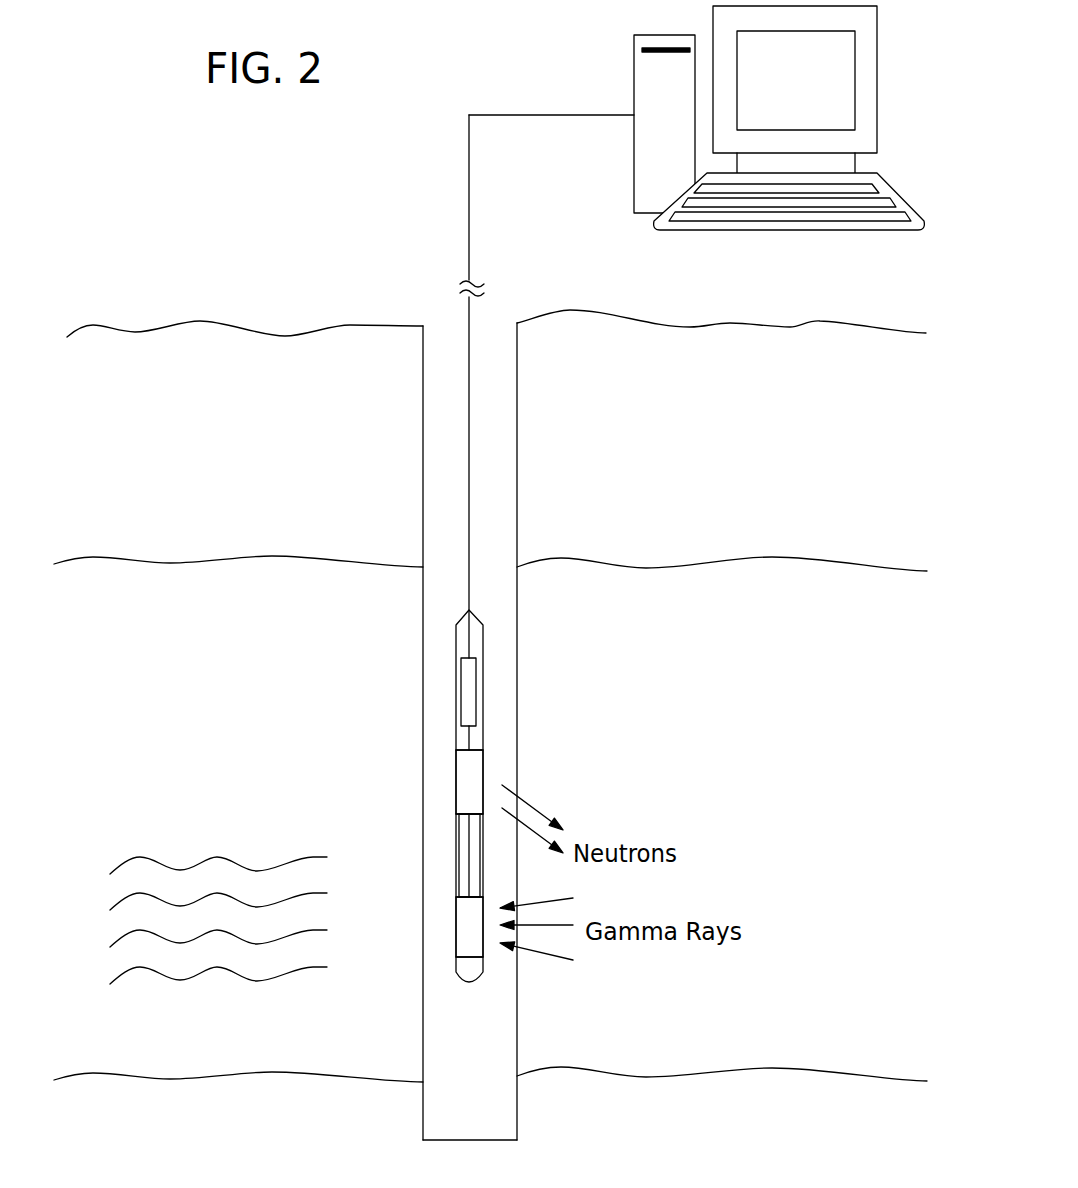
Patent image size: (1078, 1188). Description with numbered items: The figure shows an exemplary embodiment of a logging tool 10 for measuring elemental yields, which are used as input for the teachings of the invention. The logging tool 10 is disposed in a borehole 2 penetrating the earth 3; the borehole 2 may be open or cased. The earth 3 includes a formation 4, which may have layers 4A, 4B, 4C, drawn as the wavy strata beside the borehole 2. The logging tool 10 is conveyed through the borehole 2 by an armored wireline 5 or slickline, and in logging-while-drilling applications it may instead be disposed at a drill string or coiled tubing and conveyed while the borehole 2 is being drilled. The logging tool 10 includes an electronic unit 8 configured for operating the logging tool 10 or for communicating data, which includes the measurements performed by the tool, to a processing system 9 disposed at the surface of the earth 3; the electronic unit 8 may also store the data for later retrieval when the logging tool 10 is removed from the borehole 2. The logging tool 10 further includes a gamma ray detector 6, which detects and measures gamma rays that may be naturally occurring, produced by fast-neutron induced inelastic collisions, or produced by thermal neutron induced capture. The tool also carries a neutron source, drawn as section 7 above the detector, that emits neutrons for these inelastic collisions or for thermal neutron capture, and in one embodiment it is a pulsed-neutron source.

The borehole 2 is at (444, 345).
The earth 3 is at (815, 429).
The formation 4 is at (837, 782).
The layer 4A is at (115, 890).
The layer 4B is at (115, 930).
The layer 4C is at (115, 968).
The armored wireline 5 is at (468, 495).
The gamma ray detector 6 is at (456, 913).
The neutron source 7 is at (456, 790).
The electronic unit 8 is at (463, 701).
The processing system 9 is at (634, 61).
The logging tool 10 is at (419, 794).